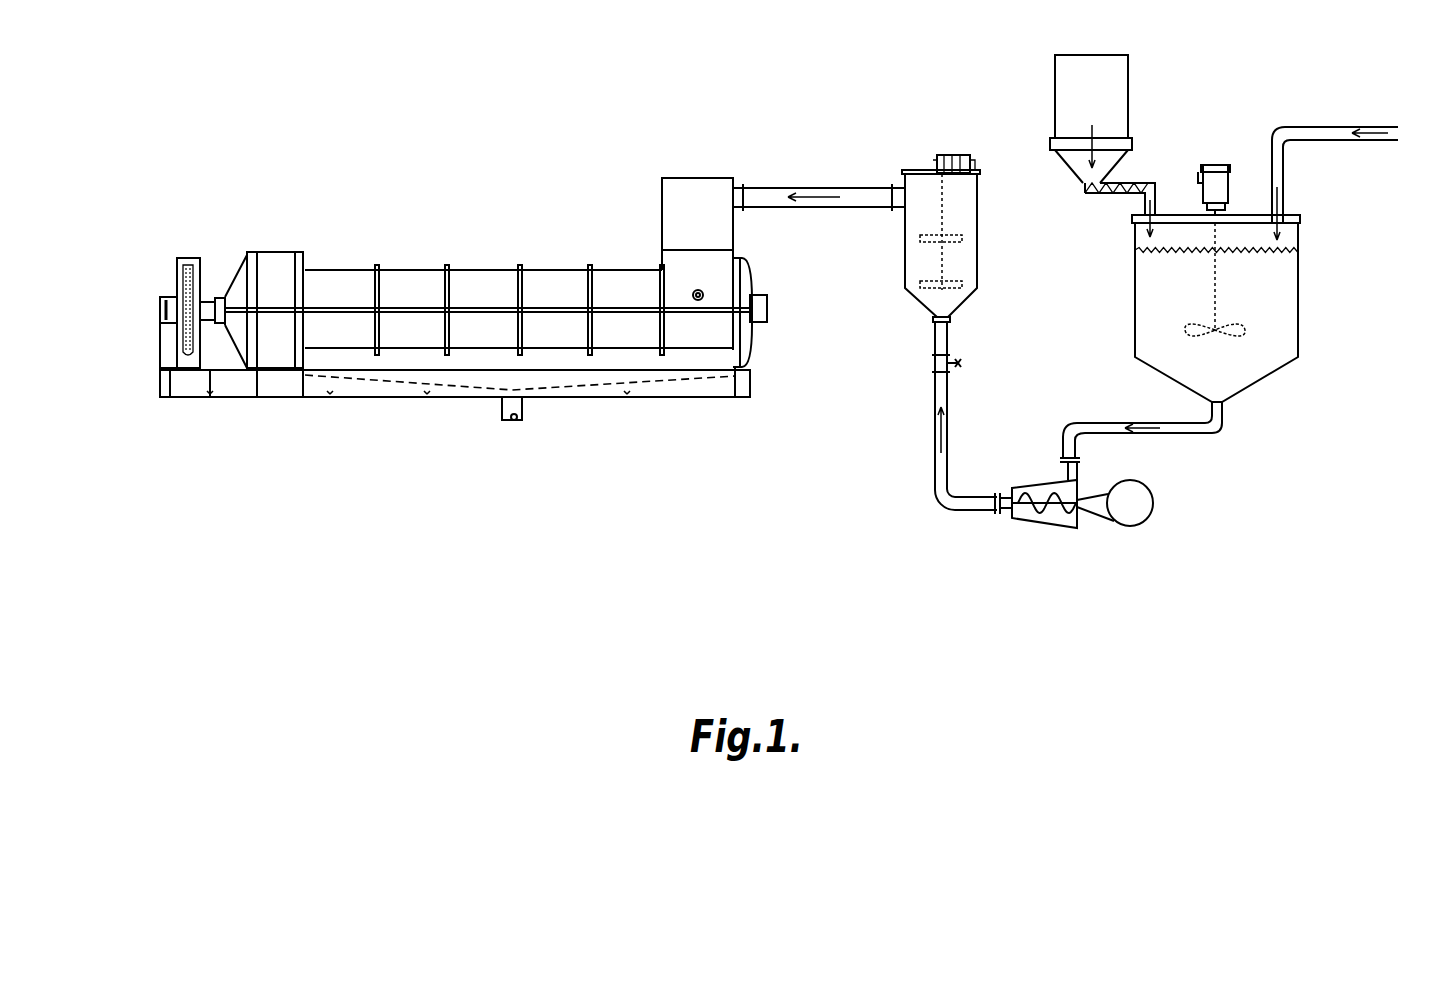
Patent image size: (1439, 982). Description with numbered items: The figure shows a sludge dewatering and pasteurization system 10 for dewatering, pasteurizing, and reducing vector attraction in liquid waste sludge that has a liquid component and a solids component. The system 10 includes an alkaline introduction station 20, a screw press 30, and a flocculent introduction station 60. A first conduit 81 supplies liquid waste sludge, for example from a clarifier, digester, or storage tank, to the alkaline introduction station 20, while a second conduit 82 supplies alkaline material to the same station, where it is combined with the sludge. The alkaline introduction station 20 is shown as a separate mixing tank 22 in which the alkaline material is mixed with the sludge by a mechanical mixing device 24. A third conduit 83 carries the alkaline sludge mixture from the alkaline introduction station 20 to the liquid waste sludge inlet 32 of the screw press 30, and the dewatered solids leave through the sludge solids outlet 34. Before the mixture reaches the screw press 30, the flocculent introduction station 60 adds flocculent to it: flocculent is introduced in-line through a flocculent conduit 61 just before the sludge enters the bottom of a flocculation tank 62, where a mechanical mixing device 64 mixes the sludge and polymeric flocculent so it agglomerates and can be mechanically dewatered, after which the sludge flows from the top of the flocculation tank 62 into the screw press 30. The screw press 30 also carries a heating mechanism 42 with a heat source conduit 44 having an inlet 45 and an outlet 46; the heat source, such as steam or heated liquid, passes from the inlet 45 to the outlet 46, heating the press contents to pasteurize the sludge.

The sludge dewatering and pasteurization system 10 is at (607, 570).
The alkaline introduction station 20 is at (1234, 274).
The mixing tank 22 is at (1308, 280).
The mechanical mixing device 24 is at (1220, 163).
The screw press 30 is at (452, 210).
The liquid waste sludge inlet 32 is at (743, 176).
The sludge solids outlet 34 is at (280, 383).
The heating mechanism 42 is at (197, 304).
The heat source conduit 44 is at (160, 310).
The outlet 46 is at (160, 322).
The inlet 45 is at (782, 310).
The flocculent introduction station 60 is at (1027, 309).
The flocculent conduit 61 is at (962, 363).
The flocculation tank 62 is at (978, 222).
The mechanical mixing device 64 is at (950, 152).
The first conduit 81 is at (1330, 127).
The second conduit 82 is at (1130, 180).
The third conduit 83 is at (1165, 438).